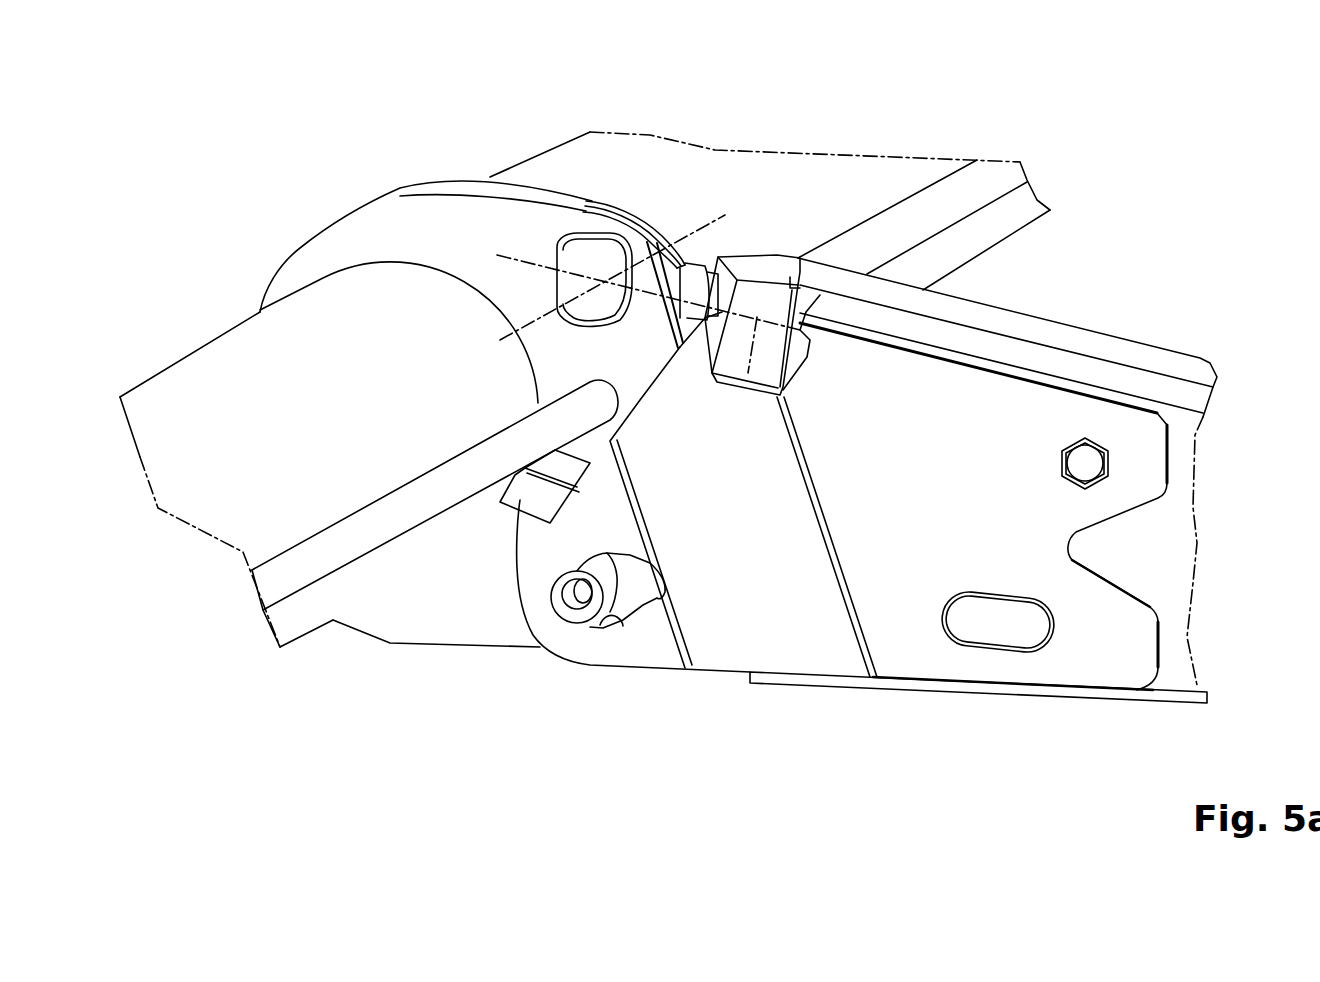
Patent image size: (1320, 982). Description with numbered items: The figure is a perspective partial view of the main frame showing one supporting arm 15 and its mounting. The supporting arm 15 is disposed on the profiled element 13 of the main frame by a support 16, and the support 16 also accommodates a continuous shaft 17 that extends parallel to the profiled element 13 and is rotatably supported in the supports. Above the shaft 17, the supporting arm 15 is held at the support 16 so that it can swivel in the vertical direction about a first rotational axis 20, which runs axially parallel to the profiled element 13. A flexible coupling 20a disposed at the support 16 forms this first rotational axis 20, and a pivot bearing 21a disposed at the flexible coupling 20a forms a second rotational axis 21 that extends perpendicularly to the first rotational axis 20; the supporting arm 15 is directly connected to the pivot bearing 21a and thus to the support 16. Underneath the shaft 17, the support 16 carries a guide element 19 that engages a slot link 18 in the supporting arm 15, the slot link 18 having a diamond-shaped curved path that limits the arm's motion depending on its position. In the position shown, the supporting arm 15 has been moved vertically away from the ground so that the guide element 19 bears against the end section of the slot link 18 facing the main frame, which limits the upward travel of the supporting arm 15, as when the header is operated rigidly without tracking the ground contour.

The profiled element 13 is at (187, 395).
The supporting arm 15 is at (1177, 512).
The support 16 is at (340, 250).
The shaft 17 is at (297, 573).
The slot link 18 is at (620, 620).
The guide element 19 is at (560, 623).
The first rotational axis 20 is at (700, 222).
The flexible coupling 20a is at (633, 212).
The second rotational axis 21 is at (748, 373).
The pivot bearing 21a is at (700, 278).